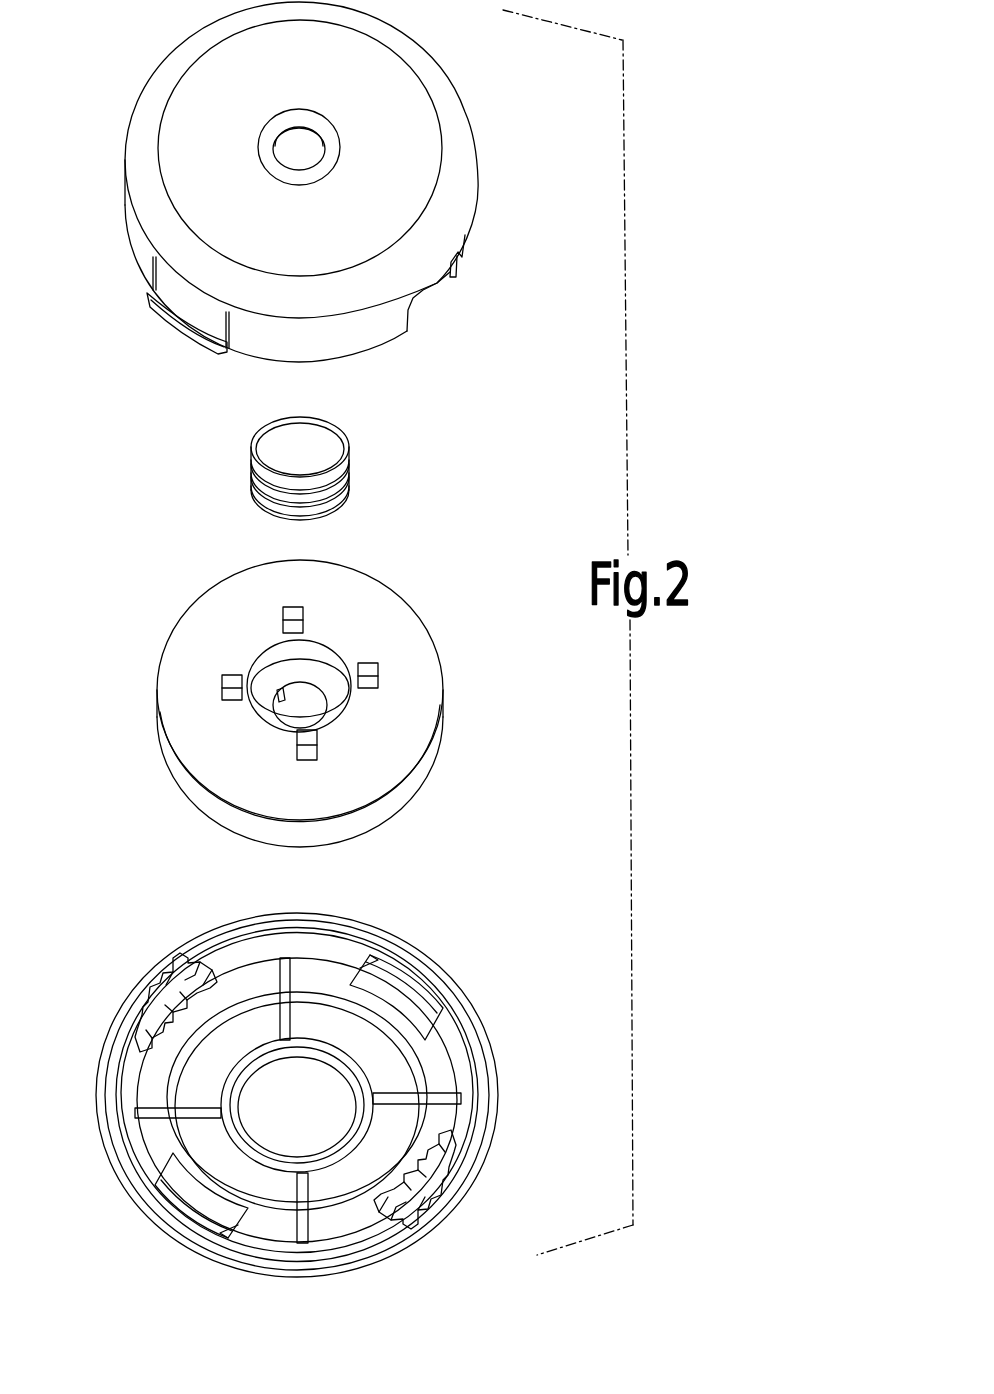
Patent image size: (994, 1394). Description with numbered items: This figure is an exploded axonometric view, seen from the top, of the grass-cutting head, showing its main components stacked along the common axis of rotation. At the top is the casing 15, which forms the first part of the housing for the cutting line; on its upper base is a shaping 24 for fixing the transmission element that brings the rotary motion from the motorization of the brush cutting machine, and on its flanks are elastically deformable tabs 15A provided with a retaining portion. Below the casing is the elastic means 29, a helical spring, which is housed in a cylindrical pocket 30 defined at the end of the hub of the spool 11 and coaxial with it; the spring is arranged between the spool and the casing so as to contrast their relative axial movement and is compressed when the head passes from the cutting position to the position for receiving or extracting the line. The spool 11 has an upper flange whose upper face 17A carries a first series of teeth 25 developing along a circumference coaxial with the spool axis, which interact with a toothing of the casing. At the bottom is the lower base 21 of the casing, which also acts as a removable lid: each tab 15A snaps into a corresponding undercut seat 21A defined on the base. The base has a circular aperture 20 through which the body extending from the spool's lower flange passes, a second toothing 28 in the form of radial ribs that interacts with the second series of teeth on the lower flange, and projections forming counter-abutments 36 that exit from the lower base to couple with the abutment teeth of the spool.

The casing 15 is at (481, 182).
The elastically deformable tabs 15A is at (193, 333).
The shaping 24 is at (333, 150).
The elastic means 29 is at (343, 462).
The spool 11 is at (438, 658).
The upper face of the upper flange 17A is at (415, 700).
The cylindrical pocket 30 is at (288, 650).
The first series of teeth 25 is at (303, 612).
The lower base 21 is at (493, 1128).
The undercut seat 21A is at (400, 997).
The circular aperture 20 is at (303, 1053).
The second toothing 28 is at (283, 972).
The counter-abutment 36 is at (272, 985).